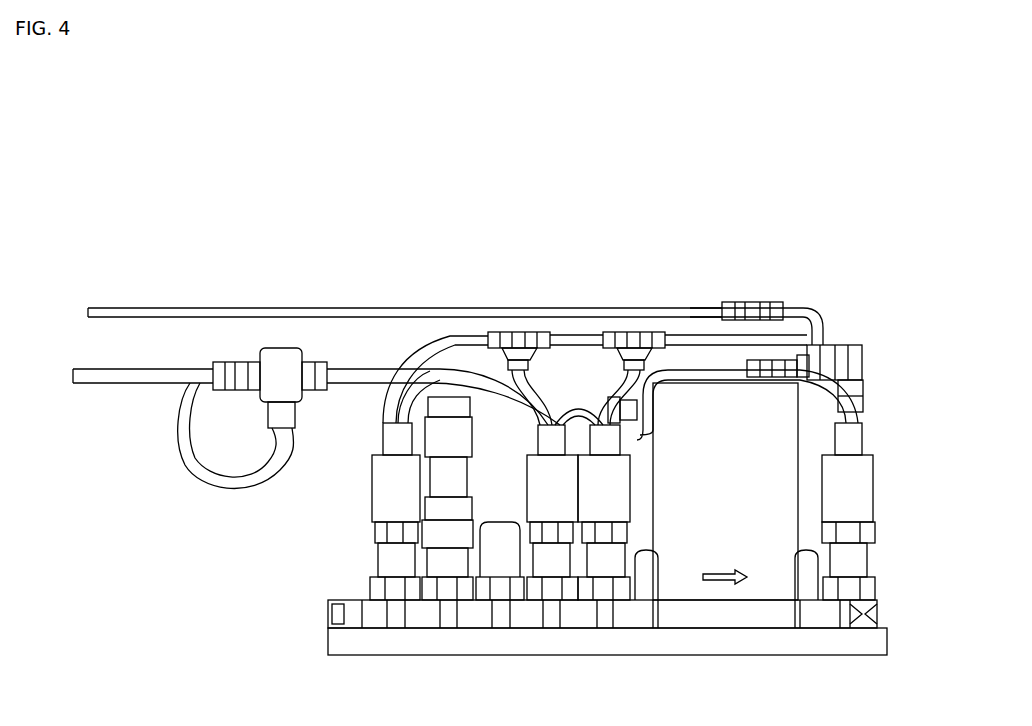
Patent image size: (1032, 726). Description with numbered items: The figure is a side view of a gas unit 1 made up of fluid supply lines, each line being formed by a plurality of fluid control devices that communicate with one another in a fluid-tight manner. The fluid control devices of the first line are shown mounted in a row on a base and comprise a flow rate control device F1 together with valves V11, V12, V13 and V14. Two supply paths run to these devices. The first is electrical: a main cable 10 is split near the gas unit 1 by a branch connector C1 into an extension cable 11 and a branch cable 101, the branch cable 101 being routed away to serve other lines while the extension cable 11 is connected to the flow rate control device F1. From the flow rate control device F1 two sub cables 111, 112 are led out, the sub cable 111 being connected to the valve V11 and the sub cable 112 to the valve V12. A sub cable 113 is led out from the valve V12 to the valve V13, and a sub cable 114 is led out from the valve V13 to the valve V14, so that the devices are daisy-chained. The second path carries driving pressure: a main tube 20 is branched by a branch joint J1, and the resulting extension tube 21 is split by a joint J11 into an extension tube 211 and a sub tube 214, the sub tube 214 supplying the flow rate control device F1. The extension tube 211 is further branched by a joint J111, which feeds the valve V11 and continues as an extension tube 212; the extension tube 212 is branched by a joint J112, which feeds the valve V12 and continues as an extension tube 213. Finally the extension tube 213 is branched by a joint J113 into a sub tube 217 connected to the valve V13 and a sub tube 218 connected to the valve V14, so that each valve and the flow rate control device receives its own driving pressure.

The gas unit 1 is at (178, 207).
The main tube 20 is at (167, 308).
The main cable 10 is at (125, 383).
The branch cable 101 is at (232, 492).
The branch connector C1 is at (282, 348).
The extension cable 11 is at (372, 368).
The sub tube 218 is at (405, 368).
The sub cable 114 is at (473, 367).
The joint J113 is at (520, 333).
The sub tube 217 is at (523, 375).
The extension tube 213 is at (597, 337).
The joint J112 is at (633, 333).
The sub cable 113 is at (592, 410).
The extension tube 21 is at (805, 308).
The extension tube 212 is at (700, 306).
The branch joint J1 is at (755, 302).
The sub cable 111 is at (697, 370).
The sub tube 214 is at (783, 352).
The joint J11 is at (830, 348).
The extension tube 211 is at (853, 367).
The joint J111 is at (862, 393).
The sub cable 112 is at (637, 427).
The flow rate control device F1 is at (718, 600).
The valve V14 is at (393, 602).
The valve V13 is at (550, 602).
The valve V12 is at (602, 602).
The valve V11 is at (838, 602).